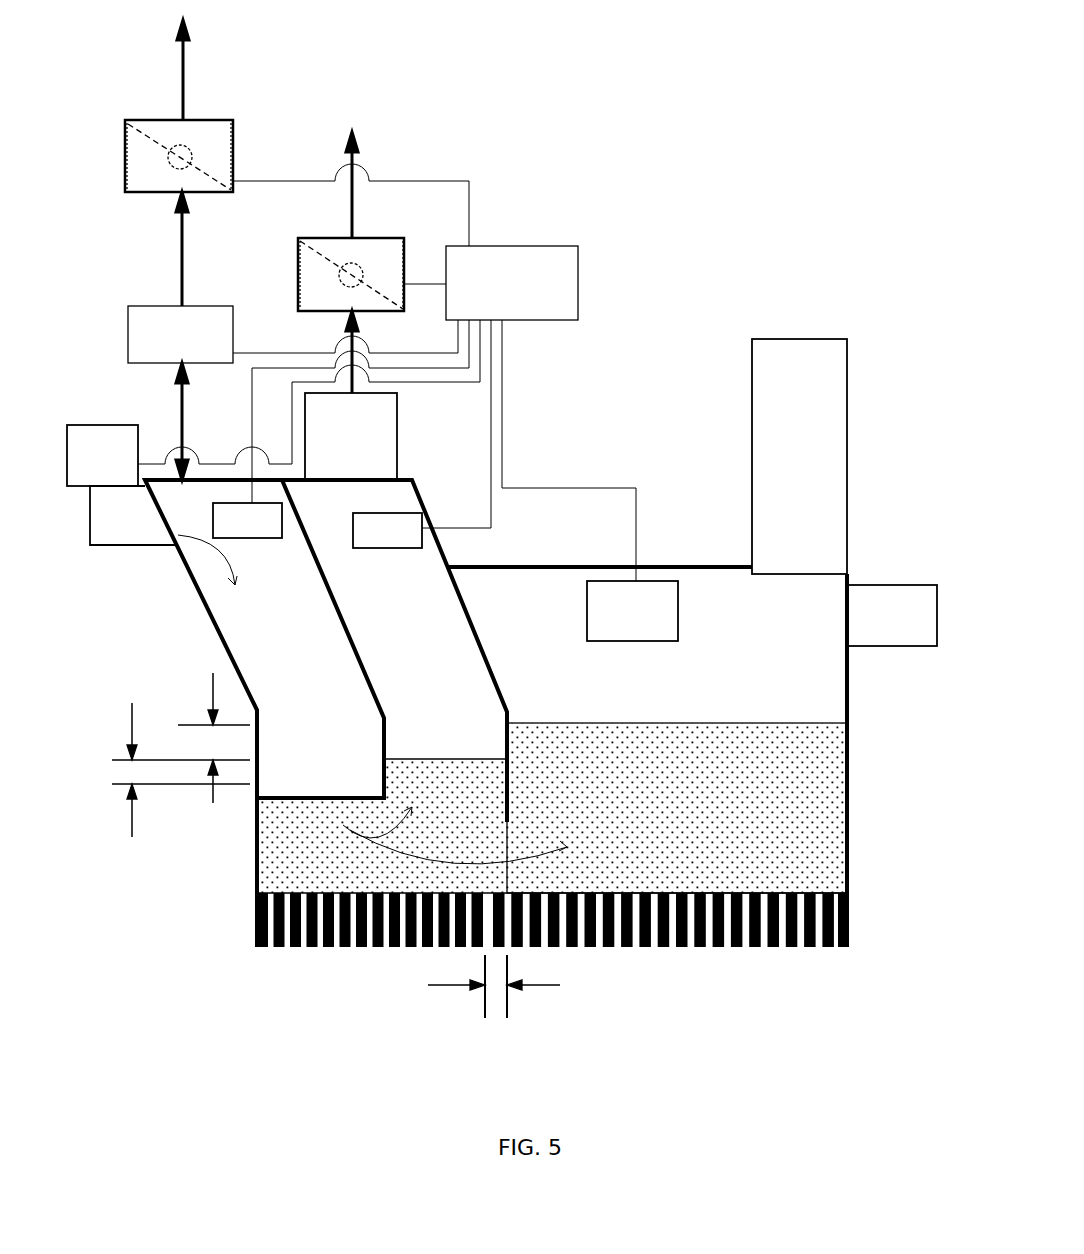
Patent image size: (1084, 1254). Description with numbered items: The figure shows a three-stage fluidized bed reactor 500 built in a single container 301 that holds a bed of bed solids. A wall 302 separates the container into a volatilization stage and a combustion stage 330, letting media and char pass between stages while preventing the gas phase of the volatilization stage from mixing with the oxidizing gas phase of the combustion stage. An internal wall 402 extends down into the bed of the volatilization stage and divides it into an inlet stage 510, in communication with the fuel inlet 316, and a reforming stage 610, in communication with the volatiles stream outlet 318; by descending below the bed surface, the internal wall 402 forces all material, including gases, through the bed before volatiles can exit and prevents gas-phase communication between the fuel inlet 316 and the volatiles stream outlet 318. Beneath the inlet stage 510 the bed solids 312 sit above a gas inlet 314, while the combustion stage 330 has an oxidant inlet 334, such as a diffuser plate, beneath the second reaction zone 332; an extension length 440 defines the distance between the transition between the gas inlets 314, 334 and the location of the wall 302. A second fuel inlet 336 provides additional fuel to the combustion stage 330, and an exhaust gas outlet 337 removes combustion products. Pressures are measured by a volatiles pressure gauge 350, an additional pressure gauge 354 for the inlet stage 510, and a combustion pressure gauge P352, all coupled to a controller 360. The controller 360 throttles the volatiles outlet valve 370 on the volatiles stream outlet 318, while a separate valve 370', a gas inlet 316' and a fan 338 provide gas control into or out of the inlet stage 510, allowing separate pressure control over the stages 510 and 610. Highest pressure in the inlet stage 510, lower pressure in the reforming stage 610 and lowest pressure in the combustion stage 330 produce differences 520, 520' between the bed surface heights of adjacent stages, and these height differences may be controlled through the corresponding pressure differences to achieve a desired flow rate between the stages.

The system 500 is at (406, 78).
The separate valve 370' is at (143, 132).
The volatiles outlet valve 370 is at (311, 259).
The controller 360 is at (491, 295).
The fan 338 is at (159, 347).
The gas inlet 316' is at (102, 455).
The fuel inlet 316 is at (133, 515).
The volatiles stream outlet 318 is at (330, 463).
The additional pressure gauge 354 is at (226, 532).
The volatiles pressure gauge 350 is at (366, 542).
The combustion pressure gauge P352 is at (604, 623).
The exhaust gas outlet 337 is at (779, 482).
The second fuel inlet 336 is at (871, 629).
The inlet stage 510 is at (291, 707).
The reforming stage 610 is at (402, 701).
The internal wall 402 is at (333, 603).
The wall 302 is at (492, 670).
The combustion stage 330 is at (759, 644).
The second reaction zone 332 is at (716, 806).
The fluid region 312 is at (279, 833).
The gas inlet 314 is at (257, 930).
The oxidant inlet 334 is at (848, 932).
The container 301 is at (847, 843).
The extension length 440 is at (519, 986).
The difference between bed surface heights 520' is at (181, 738).
The difference between bed surface heights 520 is at (181, 784).